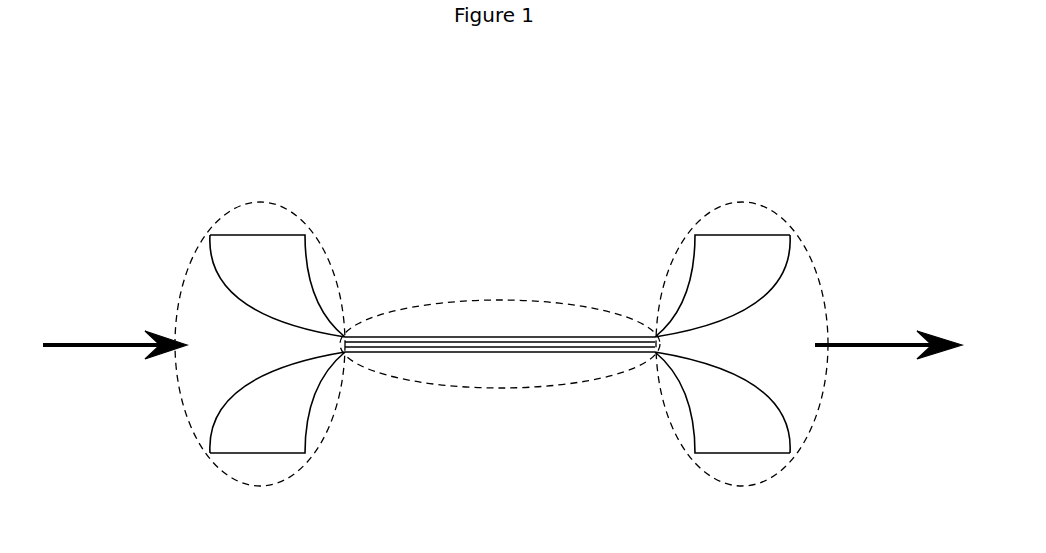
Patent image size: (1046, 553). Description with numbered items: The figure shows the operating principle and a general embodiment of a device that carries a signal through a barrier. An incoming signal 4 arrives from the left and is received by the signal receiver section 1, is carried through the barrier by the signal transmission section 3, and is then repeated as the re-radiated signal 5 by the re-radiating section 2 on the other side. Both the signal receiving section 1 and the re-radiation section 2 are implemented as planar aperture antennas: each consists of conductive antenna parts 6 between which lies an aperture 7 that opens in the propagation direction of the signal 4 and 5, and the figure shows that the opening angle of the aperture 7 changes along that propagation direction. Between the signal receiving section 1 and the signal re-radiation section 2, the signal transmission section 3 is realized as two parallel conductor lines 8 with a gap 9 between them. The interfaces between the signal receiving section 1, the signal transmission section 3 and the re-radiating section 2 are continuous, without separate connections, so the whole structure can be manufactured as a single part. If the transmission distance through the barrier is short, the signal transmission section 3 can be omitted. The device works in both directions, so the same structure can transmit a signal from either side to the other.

The signal receiver section 1 is at (297, 217).
The re-radiating section 2 is at (697, 218).
The signal transmission section 3 is at (476, 300).
The incoming signal 4 is at (92, 342).
The repeated signal 5 is at (846, 342).
The conductive antenna parts 6 is at (248, 430).
The aperture 7 is at (268, 345).
The parallel conductor lines 8 is at (471, 351).
The gap 9 is at (508, 348).